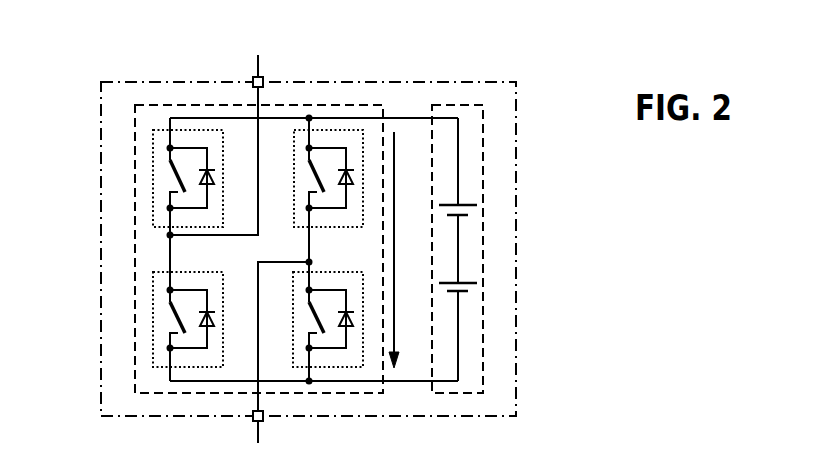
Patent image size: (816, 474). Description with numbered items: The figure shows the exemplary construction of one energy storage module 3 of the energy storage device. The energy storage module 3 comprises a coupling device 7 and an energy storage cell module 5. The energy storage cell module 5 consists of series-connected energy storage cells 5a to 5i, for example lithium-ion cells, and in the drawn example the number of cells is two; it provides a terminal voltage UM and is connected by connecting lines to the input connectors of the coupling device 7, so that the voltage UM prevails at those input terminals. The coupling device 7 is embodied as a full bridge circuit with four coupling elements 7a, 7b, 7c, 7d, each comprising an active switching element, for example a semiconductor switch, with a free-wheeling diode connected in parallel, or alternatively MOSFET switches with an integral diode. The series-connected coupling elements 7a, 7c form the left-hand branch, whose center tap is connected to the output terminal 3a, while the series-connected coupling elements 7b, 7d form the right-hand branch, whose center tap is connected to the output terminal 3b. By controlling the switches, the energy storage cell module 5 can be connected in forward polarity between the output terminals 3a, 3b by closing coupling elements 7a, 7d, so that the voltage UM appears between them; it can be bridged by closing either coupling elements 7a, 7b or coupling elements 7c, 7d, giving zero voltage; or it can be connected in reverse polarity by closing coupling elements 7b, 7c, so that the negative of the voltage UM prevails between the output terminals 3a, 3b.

The energy storage module 3 is at (99, 245).
The output terminal 3a is at (253, 82).
The output terminal 3b is at (254, 416).
The energy storage cell module 5 is at (499, 249).
The energy storage cell 5a is at (484, 215).
The energy storage cell 5i is at (484, 290).
The coupling device 7 is at (135, 122).
The coupling element 7a is at (155, 178).
The coupling element 7b is at (342, 130).
The coupling element 7c is at (155, 327).
The coupling element 7d is at (342, 370).
The terminal voltage UM is at (407, 250).